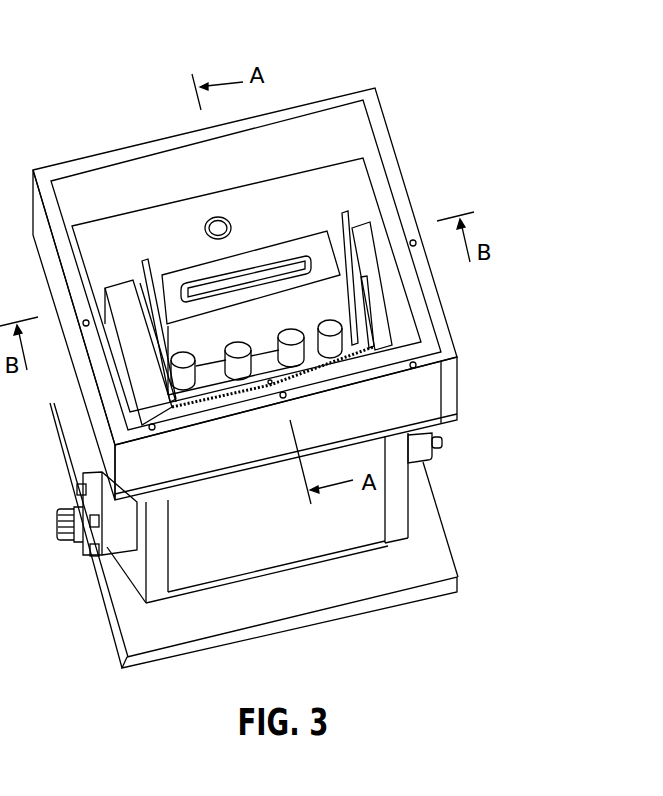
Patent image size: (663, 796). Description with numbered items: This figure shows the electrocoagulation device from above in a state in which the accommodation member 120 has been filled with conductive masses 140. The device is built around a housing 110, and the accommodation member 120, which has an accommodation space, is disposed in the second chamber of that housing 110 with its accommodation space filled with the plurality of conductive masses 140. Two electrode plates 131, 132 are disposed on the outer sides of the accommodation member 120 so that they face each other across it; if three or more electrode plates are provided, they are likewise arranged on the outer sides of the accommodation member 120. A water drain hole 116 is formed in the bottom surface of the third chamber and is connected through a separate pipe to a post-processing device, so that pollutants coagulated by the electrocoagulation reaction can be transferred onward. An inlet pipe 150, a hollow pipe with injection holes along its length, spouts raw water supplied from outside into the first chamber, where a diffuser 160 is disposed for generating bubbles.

The housing 110 is at (468, 392).
The water drain hole 116 is at (212, 217).
The accommodation member 120 is at (311, 226).
The electrode plate 131 is at (142, 262).
The electrode plate 132 is at (350, 213).
The conductive masses 140 is at (334, 326).
The inlet pipe 150 is at (62, 558).
The diffuser 160 is at (452, 443).